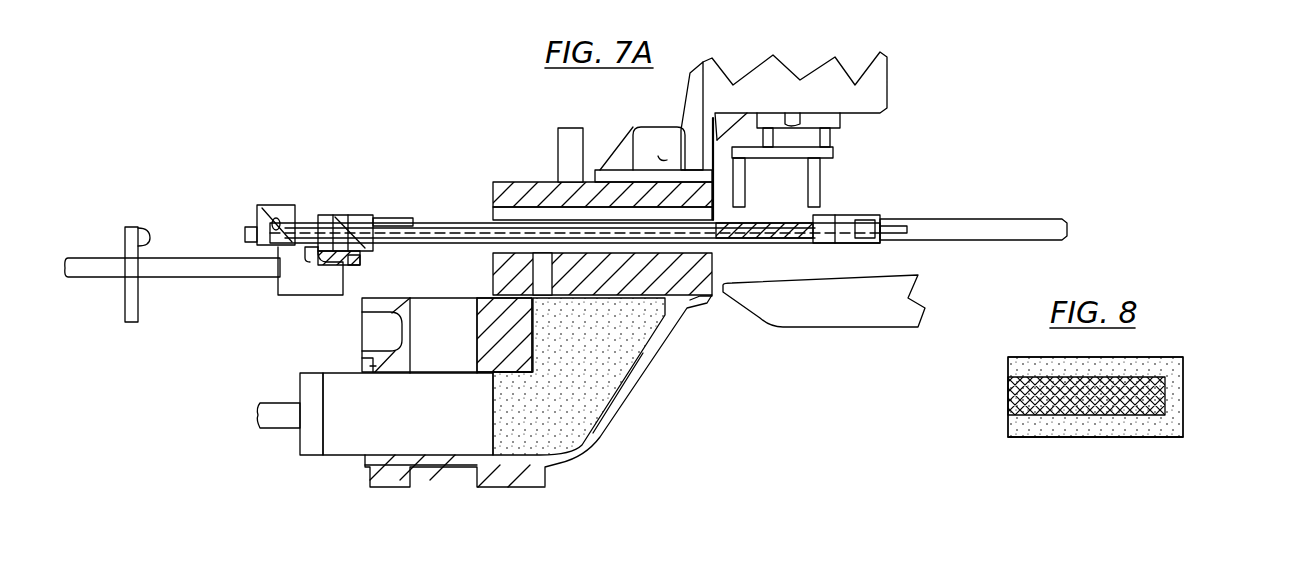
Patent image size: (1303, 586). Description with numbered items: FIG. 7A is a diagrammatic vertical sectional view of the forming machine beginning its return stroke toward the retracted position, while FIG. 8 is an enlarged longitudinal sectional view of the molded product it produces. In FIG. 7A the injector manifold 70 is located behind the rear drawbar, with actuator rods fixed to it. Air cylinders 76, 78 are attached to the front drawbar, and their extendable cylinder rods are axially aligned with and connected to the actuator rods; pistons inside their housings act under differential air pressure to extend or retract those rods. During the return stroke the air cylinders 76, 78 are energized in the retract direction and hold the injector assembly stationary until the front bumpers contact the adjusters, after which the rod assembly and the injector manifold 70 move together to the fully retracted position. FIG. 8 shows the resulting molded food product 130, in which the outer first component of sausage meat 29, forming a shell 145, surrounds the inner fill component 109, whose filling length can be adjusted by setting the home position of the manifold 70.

In FIG. 7A, the injector manifold 70 is at (270, 205).
In FIG. 7A, the air cylinder 76 is at (675, 195).
In FIG. 7A, the air cylinder 78 is at (1003, 218).
In FIG. 8, the molded food product 130 is at (1102, 394).
In FIG. 8, the inner fill component 109 is at (1008, 398).
In FIG. 8, the sausage meat 29 is at (1177, 415).
In FIG. 8, the shell 145 is at (1140, 438).